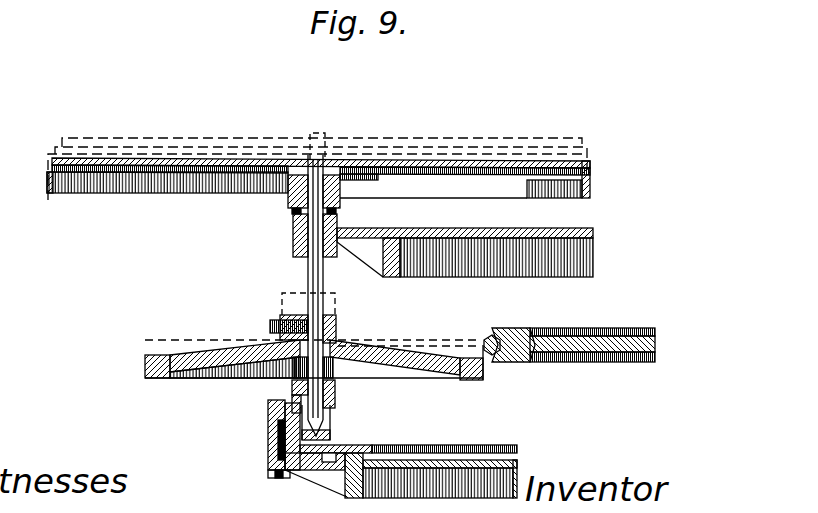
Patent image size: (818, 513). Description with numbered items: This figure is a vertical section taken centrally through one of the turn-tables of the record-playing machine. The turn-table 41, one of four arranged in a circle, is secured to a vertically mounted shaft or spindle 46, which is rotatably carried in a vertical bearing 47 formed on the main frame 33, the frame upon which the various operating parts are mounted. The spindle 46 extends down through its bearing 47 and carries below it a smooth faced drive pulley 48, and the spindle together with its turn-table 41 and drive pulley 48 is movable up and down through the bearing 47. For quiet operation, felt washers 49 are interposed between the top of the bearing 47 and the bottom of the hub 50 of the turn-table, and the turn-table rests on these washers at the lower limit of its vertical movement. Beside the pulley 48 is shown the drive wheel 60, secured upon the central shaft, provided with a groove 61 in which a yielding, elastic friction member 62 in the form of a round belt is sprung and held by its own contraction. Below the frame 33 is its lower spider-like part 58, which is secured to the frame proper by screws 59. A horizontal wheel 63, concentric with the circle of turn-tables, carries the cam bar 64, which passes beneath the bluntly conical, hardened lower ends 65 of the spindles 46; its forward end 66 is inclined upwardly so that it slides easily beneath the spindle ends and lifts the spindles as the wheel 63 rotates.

The turn-table 41 is at (50, 178).
The hub 50 is at (290, 200).
The felt washers 49 is at (293, 212).
The vertical bearing 47 is at (295, 242).
The main frame 33 is at (431, 240).
The shaft or spindle 46 is at (310, 283).
The drive pulley 48 is at (148, 366).
The friction member 62 is at (487, 338).
The groove 61 is at (502, 340).
The drive wheel 60 is at (518, 334).
The cam bar 64 is at (330, 412).
The lower ends of the spindles 65 is at (324, 428).
The forward end of the cam bar 66 is at (332, 445).
The horizontal wheel 63 is at (466, 440).
The spider-like part 58 is at (517, 476).
The screws 59 is at (295, 437).